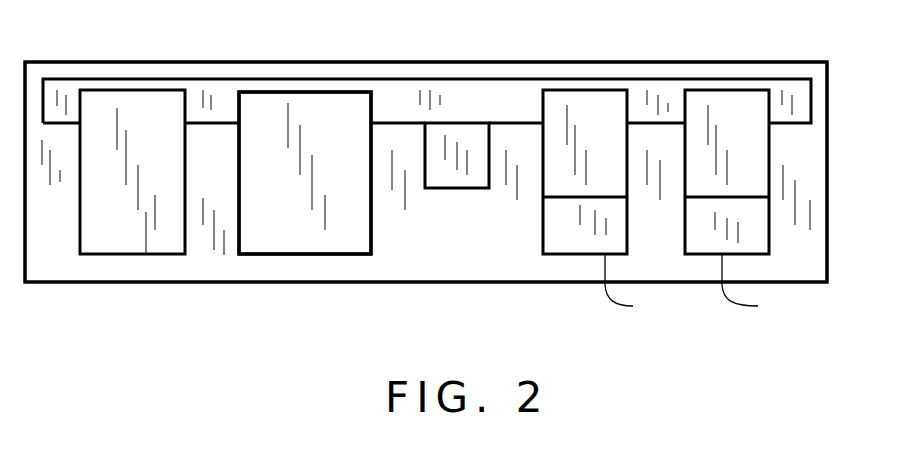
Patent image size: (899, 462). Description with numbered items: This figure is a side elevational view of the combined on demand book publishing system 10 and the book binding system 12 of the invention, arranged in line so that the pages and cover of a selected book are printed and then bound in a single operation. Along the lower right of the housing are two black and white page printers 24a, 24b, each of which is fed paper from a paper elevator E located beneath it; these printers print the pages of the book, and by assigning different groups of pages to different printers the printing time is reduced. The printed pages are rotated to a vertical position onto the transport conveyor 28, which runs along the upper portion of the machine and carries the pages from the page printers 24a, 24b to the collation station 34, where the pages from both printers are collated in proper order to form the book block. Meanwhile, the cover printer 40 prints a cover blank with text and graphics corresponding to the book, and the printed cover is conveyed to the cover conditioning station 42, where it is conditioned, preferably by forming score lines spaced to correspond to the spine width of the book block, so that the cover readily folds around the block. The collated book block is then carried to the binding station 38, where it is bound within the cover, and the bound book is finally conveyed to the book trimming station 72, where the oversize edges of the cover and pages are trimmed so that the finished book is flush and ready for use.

The on demand book publishing system 10 is at (390, 306).
The book binding system 12 is at (148, 53).
The transport conveyor 28 is at (518, 78).
The book trimming station 72 is at (102, 200).
The cover printer 40 is at (323, 257).
The cover conditioning station 42 is at (346, 108).
The binding station 38 is at (273, 104).
The collation station 34 is at (469, 192).
The page printer 24b is at (543, 172).
The page printer 24a is at (770, 159).
The paper elevator E is at (689, 287).